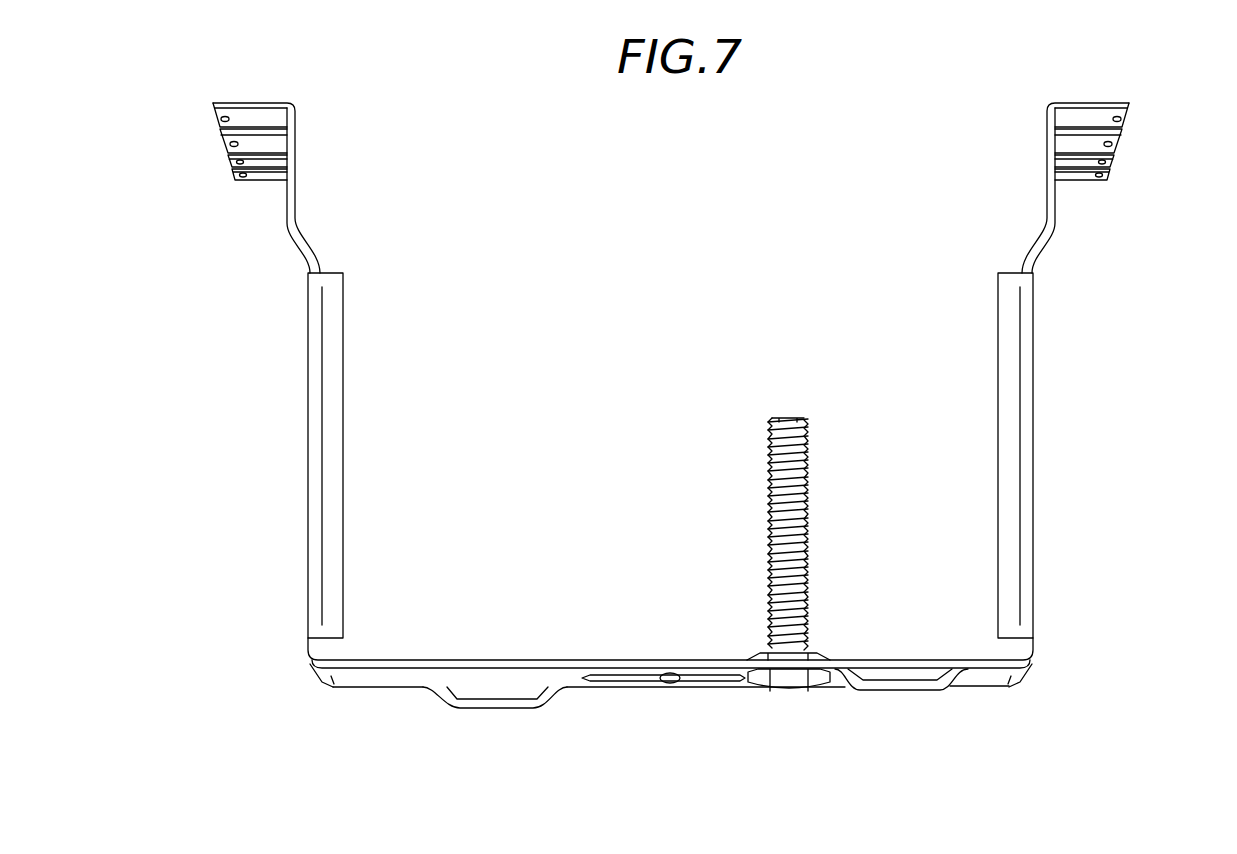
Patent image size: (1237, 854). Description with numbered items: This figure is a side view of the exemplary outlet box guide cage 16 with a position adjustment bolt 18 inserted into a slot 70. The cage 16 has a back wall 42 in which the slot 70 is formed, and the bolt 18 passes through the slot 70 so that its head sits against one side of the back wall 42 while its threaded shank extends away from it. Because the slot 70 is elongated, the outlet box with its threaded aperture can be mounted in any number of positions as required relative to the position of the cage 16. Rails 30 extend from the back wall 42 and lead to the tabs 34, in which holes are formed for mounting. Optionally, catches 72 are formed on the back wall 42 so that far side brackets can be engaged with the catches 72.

The outlet box guide cage 16 is at (1075, 308).
The position adjustment bolt 18 is at (825, 452).
The rail 30 is at (312, 390).
The tab 34 is at (225, 141).
The back wall 42 is at (405, 660).
The slot 70 is at (673, 684).
The catch 72 is at (486, 708).